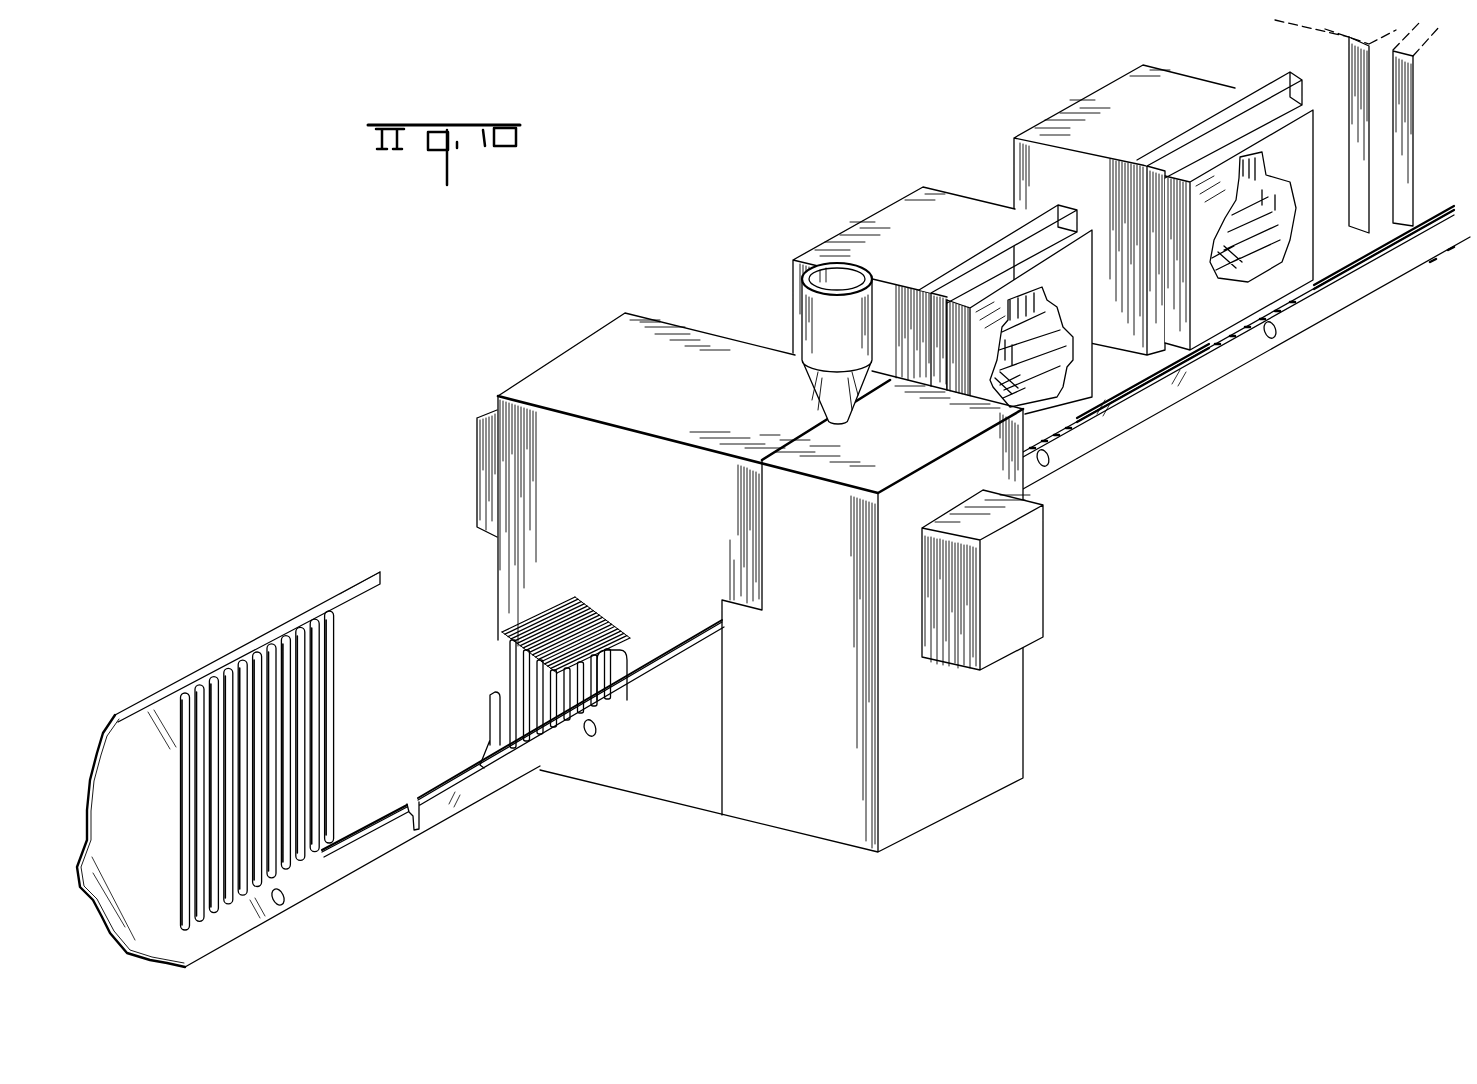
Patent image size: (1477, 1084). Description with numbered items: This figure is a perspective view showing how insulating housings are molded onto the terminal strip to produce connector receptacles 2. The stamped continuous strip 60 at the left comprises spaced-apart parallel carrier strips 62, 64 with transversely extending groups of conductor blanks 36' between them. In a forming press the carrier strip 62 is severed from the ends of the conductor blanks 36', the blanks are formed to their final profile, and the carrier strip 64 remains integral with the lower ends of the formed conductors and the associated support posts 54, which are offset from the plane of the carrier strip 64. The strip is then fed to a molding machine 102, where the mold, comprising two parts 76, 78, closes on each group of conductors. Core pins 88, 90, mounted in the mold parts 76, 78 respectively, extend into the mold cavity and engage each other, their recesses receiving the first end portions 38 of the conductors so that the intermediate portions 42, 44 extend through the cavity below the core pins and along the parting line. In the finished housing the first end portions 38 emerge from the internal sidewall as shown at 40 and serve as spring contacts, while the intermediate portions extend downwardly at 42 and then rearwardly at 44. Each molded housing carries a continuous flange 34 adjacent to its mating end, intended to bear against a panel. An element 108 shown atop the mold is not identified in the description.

The connector receptacle 2 is at (1063, 90).
The continuous flange 34 is at (1210, 122).
The conductor blanks 36' is at (256, 770).
The first end portions 38 is at (598, 601).
The emergence location of first end portions 40 is at (622, 630).
The downwardly extending intermediate portion 42 is at (622, 635).
The rearwardly extending intermediate portion 44 is at (518, 678).
The support posts 54 is at (493, 712).
The stamped continuous strip 60 is at (214, 613).
The carrier strip 62 is at (345, 582).
The carrier strip 64 is at (1143, 408).
The mold part 76 is at (627, 332).
The mold part 78 is at (1012, 695).
The core pin 88 is at (477, 440).
The core pin 90 is at (1030, 605).
The molding machine 102 is at (680, 292).
The feed hopper 108 is at (834, 273).